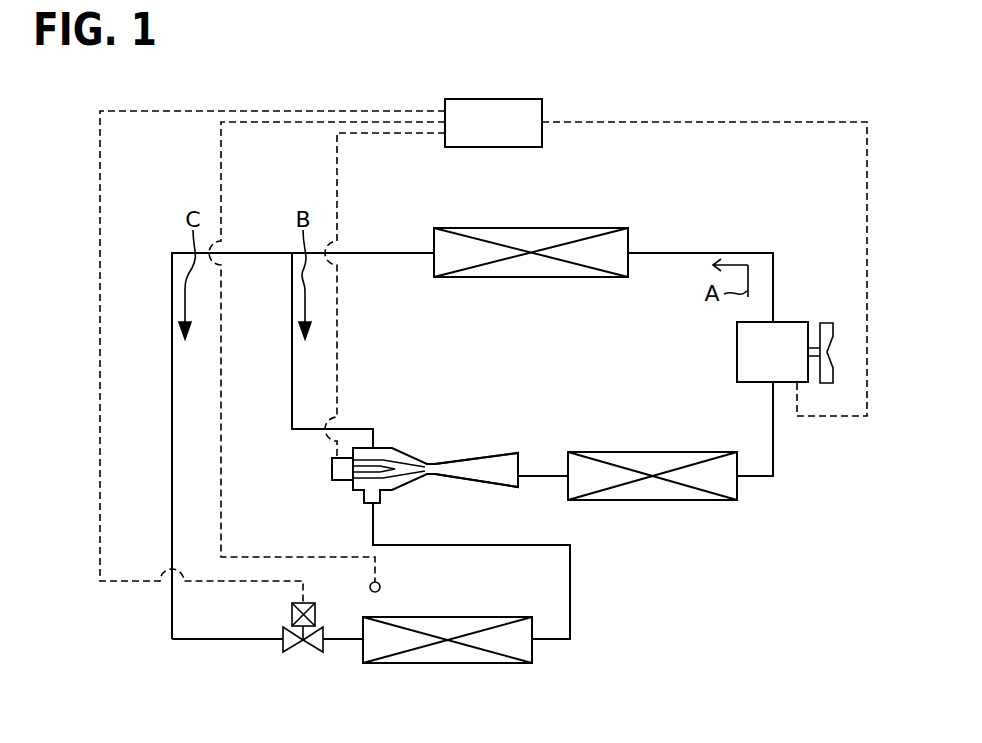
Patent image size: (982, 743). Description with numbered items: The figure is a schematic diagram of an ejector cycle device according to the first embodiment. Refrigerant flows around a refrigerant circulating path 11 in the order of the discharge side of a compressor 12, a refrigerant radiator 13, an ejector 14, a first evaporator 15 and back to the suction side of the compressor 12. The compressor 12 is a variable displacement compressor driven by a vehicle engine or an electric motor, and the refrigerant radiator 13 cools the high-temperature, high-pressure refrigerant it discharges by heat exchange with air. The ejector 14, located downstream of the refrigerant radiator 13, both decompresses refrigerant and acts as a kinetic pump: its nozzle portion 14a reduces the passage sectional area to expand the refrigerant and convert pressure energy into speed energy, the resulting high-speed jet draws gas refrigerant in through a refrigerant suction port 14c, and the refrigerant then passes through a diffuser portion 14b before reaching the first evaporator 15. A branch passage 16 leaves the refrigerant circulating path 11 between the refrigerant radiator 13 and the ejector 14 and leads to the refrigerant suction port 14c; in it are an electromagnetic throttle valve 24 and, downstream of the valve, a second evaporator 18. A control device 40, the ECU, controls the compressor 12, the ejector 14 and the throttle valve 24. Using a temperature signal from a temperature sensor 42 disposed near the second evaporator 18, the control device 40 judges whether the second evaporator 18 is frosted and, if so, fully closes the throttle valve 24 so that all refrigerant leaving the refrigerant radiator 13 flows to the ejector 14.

The refrigerant circulating path 11 is at (292, 368).
The compressor 12 is at (788, 322).
The refrigerant radiator 13 is at (527, 228).
The ejector 14 is at (434, 468).
The nozzle portion 14a is at (398, 460).
The diffuser portion 14b is at (495, 487).
The refrigerant suction port 14c is at (385, 503).
The first evaporator 15 is at (622, 452).
The branch passage 16 is at (172, 436).
The second evaporator 18 is at (450, 664).
The electromagnetic throttle valve 24 is at (293, 654).
The control device 40 is at (521, 99).
The temperature sensor 42 is at (381, 586).